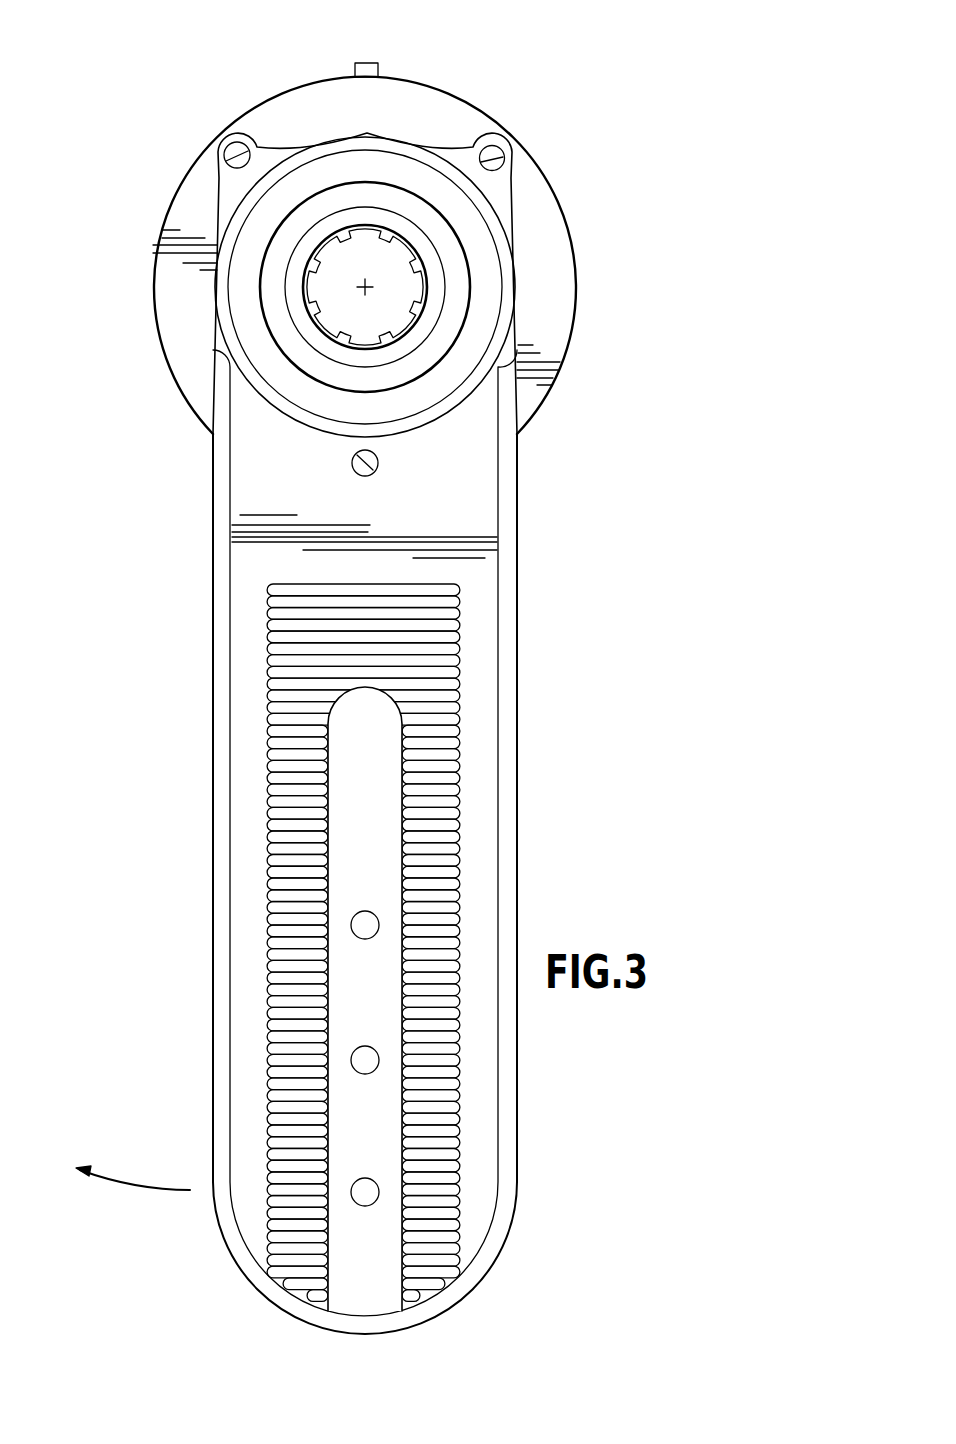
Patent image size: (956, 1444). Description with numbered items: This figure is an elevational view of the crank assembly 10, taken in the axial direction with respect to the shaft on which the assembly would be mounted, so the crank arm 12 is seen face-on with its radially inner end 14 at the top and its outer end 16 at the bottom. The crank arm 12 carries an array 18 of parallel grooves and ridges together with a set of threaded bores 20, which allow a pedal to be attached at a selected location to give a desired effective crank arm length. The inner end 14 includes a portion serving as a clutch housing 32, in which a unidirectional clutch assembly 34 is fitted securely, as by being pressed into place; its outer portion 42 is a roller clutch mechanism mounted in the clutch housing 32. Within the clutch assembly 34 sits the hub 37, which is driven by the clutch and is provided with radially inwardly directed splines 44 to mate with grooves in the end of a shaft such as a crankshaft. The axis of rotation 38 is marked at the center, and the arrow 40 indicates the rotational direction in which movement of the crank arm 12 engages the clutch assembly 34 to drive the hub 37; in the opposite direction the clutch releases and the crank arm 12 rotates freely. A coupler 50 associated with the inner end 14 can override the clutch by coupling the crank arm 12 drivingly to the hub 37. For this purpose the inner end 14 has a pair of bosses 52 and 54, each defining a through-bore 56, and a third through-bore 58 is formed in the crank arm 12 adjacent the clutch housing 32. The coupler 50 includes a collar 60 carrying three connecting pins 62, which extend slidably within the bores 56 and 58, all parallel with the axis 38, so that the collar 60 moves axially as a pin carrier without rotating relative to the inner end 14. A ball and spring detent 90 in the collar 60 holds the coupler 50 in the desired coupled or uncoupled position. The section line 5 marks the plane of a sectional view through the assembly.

The section line 5- 5 is at (408, 29).
The crank assembly 10 is at (548, 625).
The crank arm 12 is at (475, 487).
The radially inner end 14 is at (365, 133).
The outer end 16 is at (365, 1333).
The array of parallel grooves and ridges 18 is at (462, 755).
The threaded bores 20 is at (365, 910).
The clutch housing 32 is at (442, 160).
The unidirectional clutch assembly 34 is at (433, 280).
The hub 37 is at (347, 308).
The axis of rotation 38 is at (373, 280).
The arrow 40 is at (135, 1180).
The outer portion 42 is at (433, 311).
The splines 44 is at (410, 316).
The coupler 50 is at (580, 323).
The boss 52 is at (218, 180).
The boss 54 is at (511, 183).
The through-bores 56 is at (228, 157).
The third through-bore 58 is at (378, 470).
The collar 60 is at (573, 268).
The connecting pins 62 is at (230, 147).
The ball and spring detent 90 is at (380, 64).